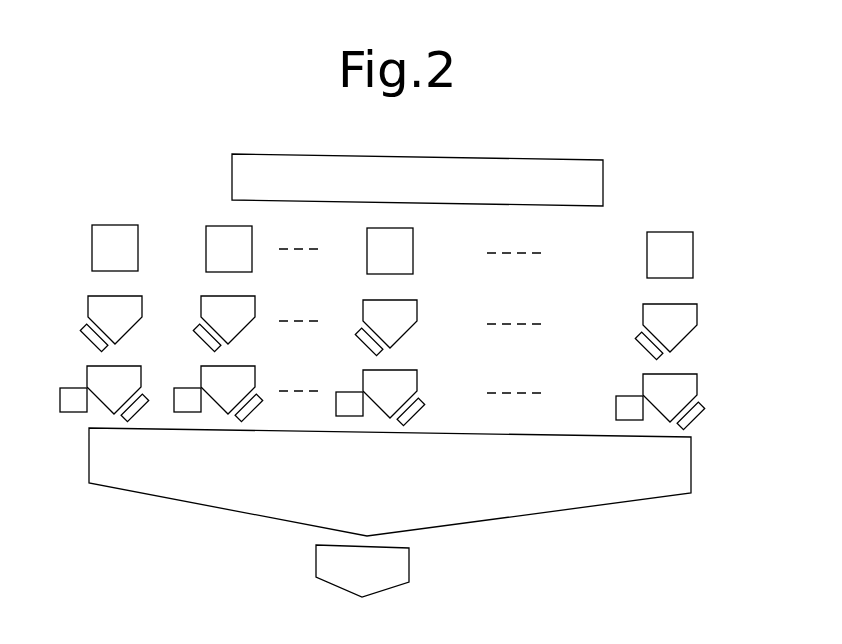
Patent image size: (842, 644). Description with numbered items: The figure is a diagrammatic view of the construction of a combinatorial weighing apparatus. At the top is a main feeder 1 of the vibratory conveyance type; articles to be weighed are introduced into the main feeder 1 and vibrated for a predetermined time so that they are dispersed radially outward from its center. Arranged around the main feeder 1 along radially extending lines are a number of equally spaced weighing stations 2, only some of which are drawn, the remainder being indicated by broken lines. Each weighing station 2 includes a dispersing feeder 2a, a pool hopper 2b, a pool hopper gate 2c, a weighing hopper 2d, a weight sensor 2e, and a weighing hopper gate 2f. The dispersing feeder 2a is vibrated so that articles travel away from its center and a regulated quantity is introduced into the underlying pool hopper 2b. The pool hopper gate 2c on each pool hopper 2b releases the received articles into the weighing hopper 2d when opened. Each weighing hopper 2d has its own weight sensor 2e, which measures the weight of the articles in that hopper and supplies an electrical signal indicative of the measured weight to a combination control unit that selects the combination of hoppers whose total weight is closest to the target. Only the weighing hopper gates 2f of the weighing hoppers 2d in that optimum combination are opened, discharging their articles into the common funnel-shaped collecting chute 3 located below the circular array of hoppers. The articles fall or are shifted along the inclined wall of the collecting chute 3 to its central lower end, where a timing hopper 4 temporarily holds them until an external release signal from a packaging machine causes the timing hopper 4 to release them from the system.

The main feeder 1 is at (436, 161).
The weighing station 2 is at (74, 186).
The dispersing feeder 2a is at (118, 233).
The pool hopper 2b is at (90, 300).
The pool hopper gate 2c is at (80, 333).
The weighing hopper 2d is at (88, 370).
The weight sensor 2e is at (72, 401).
The weighing hopper gate 2f is at (132, 408).
The collecting chute 3 is at (514, 510).
The timing hopper 4 is at (404, 566).